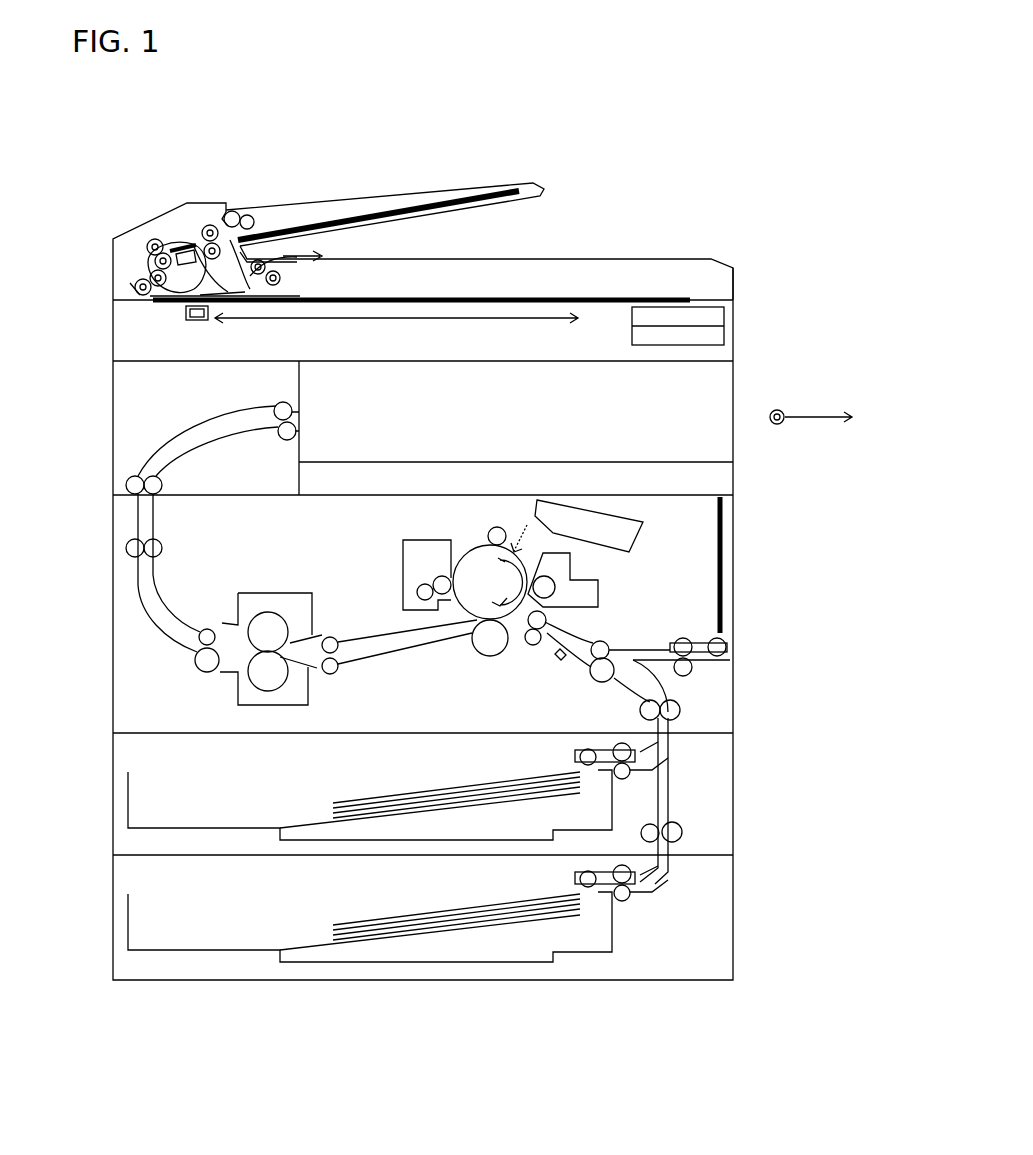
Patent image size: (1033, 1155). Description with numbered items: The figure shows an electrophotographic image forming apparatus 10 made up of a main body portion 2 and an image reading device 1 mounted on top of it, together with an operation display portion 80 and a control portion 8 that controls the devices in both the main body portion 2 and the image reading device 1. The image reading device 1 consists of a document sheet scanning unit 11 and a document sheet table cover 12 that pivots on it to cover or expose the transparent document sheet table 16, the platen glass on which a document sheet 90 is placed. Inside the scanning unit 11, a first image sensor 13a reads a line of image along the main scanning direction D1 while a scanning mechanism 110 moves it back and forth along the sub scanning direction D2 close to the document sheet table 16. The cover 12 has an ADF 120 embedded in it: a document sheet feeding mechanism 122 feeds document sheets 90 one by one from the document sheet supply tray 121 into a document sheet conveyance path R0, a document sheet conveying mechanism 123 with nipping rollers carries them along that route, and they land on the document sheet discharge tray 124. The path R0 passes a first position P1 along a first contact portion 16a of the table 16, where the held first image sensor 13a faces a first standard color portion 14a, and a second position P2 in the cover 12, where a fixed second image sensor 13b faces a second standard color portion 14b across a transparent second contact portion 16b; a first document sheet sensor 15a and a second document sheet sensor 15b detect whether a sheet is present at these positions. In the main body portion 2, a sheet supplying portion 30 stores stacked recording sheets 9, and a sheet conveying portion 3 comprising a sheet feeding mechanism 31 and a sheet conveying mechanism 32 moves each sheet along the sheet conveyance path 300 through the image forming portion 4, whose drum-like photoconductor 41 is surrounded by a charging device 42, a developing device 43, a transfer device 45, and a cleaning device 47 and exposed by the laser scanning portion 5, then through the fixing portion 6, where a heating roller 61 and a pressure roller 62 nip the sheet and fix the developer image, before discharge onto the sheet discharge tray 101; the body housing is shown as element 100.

The image reading device 1 is at (44, 293).
The image forming apparatus 10 is at (746, 198).
The document sheet scanning unit 11 is at (110, 329).
The document sheet table cover 12 is at (110, 278).
The ADF 120 is at (110, 260).
The document sheet supply tray 121 is at (539, 196).
The document sheet feeding mechanism 122 is at (234, 212).
The document sheet conveying mechanism 123 is at (208, 226).
The document sheet discharge tray 124 is at (457, 259).
The document sheet 90 is at (408, 205).
The first image sensor 13a is at (188, 318).
The second image sensor 13b is at (176, 250).
The first standard color portion 14a is at (325, 248).
The second standard color portion 14b is at (180, 247).
The first document sheet sensor 15a is at (158, 297).
The second document sheet sensor 15b is at (197, 240).
The document sheet table 16 is at (592, 303).
The first contact portion 16a is at (186, 300).
The second contact portion 16b is at (150, 258).
The scanning mechanism 110 is at (212, 318).
The operation display portion 80 is at (726, 316).
The control portion 8 is at (726, 332).
The apparatus body 100 is at (112, 557).
The sheet discharge tray 101 is at (533, 462).
The main body portion 2 is at (738, 543).
The sheet conveying portion 3 is at (716, 829).
The sheet supplying portion 30 is at (127, 772).
The sheet feeding mechanism 31 is at (634, 782).
The sheet conveying mechanism 32 is at (280, 402).
The sheet conveyance path 300 is at (580, 660).
The image forming portion 4 is at (372, 575).
The photoconductor 41 is at (470, 548).
The charging device 42 is at (520, 525).
The developing device 43 is at (574, 558).
The transfer device 45 is at (490, 657).
The cleaning device 47 is at (425, 540).
The laser scanning portion 5 is at (642, 538).
The fixing portion 6 is at (218, 690).
The heating roller 61 is at (254, 620).
The pressure roller 62 is at (288, 686).
The recording sheet 9 is at (402, 797).
The first position P1 is at (246, 291).
The second position P2 is at (186, 242).
The document sheet conveyance path R0 is at (152, 258).
The main scanning direction D1 is at (780, 433).
The sub scanning direction D2 is at (837, 417).